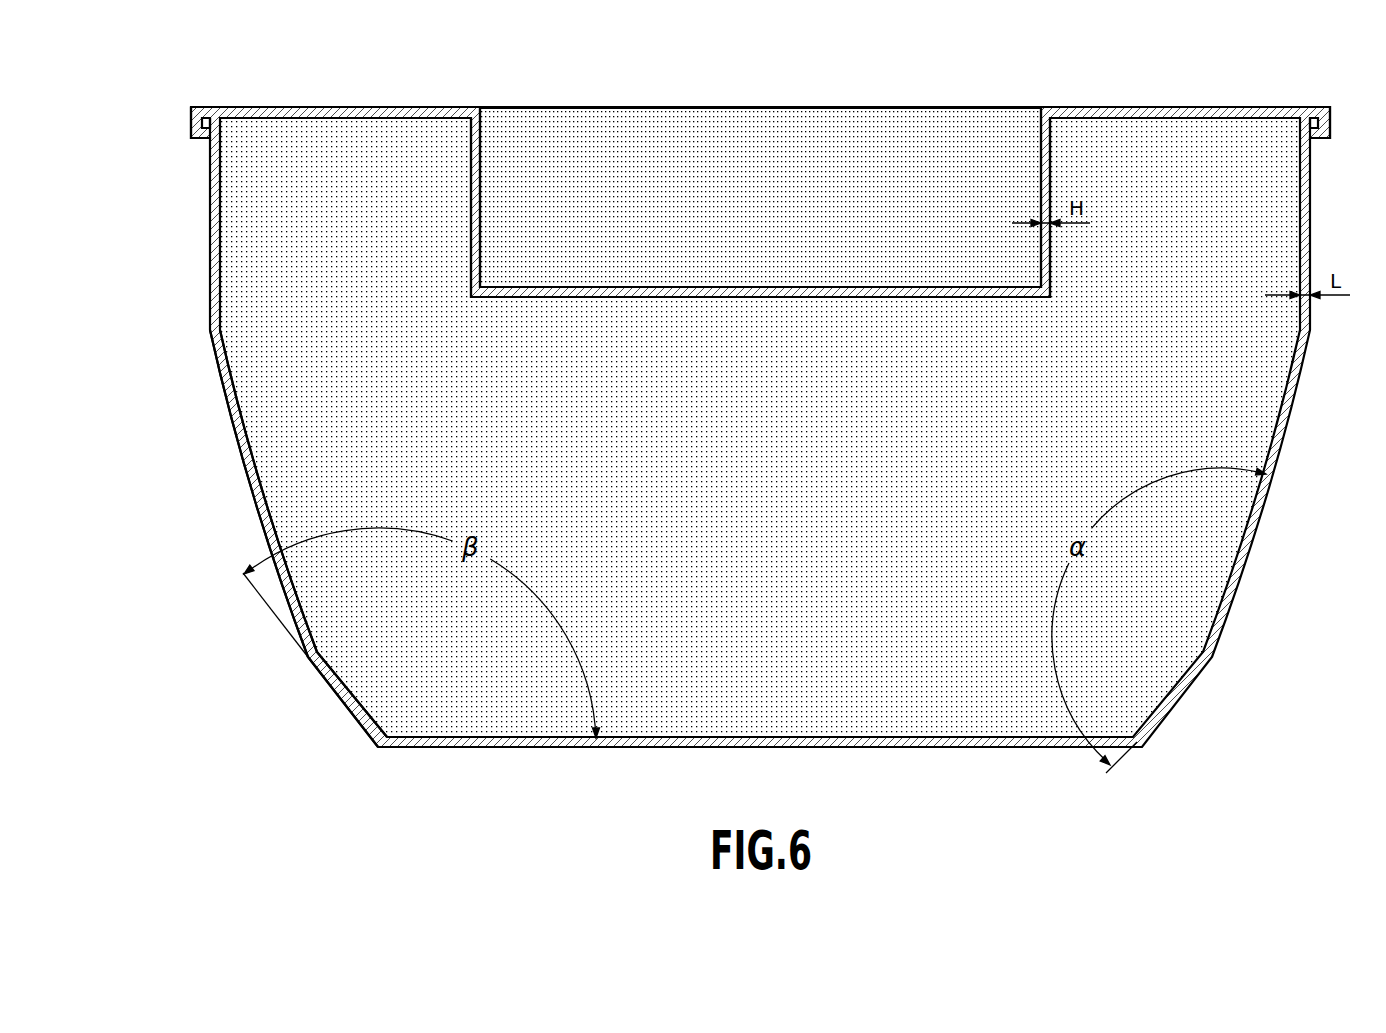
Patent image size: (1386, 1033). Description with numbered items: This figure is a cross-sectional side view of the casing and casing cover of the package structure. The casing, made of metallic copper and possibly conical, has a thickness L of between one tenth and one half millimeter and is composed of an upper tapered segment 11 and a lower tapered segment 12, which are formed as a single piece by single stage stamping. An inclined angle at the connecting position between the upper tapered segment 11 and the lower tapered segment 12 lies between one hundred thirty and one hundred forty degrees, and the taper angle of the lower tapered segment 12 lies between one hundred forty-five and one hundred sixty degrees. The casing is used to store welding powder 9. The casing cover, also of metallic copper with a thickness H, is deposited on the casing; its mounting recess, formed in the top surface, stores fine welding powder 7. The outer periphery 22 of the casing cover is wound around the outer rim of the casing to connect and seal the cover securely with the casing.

The fine welding powder 7 is at (679, 153).
The welding powder 9 is at (1210, 392).
The upper tapered segment 11 is at (250, 470).
The lower tapered segment 12 is at (348, 702).
The outer periphery 22 is at (203, 127).